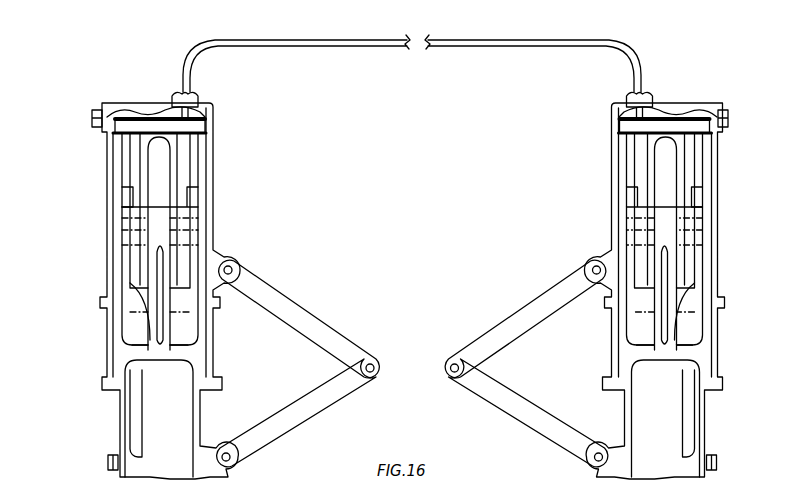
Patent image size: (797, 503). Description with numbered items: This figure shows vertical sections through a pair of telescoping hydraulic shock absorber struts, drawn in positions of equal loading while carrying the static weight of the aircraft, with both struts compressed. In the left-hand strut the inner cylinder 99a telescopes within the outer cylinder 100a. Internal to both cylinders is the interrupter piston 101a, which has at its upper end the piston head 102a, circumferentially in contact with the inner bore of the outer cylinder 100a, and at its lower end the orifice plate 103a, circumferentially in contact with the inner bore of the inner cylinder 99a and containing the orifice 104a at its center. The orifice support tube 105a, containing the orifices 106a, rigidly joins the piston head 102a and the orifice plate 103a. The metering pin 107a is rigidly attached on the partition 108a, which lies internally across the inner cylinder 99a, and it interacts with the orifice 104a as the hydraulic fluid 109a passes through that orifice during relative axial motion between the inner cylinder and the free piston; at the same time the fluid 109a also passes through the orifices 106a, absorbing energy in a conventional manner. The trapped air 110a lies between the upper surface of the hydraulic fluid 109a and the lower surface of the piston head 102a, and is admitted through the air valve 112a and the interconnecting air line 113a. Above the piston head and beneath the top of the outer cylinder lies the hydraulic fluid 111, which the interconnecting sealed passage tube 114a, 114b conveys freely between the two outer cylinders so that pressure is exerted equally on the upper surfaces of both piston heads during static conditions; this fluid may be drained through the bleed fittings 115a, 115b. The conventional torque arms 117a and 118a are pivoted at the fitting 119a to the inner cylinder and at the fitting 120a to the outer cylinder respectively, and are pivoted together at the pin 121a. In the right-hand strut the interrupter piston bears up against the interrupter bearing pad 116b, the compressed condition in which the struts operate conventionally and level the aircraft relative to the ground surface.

The outer cylinder 100a is at (140, 104).
The bleed fitting 115a is at (92, 118).
The piston head 102a is at (160, 118).
The hydraulic fluid 111 is at (200, 108).
The interconnecting sealed passage tube 114a is at (312, 35).
The interconnecting sealed passage tube 114b is at (545, 35).
The interrupter piston 101a is at (128, 150).
The partition 108a is at (190, 350).
The orifices 106a is at (190, 158).
The orifice support tube 105a is at (125, 187).
The trapped air 110a is at (190, 172).
The hydraulic fluid 109a is at (185, 215).
The orifice 104a is at (158, 300).
The orifice plate 103a is at (130, 283).
The metering pin 107a is at (150, 340).
The inner cylinder 99a is at (120, 403).
The interconnecting air line 113a is at (140, 432).
The air valve 112a is at (108, 462).
The fitting 120a is at (232, 262).
The torque arm 118a is at (283, 300).
The pin 121a is at (373, 358).
The torque arm 117a is at (303, 418).
The fitting 119a is at (240, 462).
The bleed fitting 115b is at (728, 116).
The interrupter bearing pad 116b is at (665, 117).